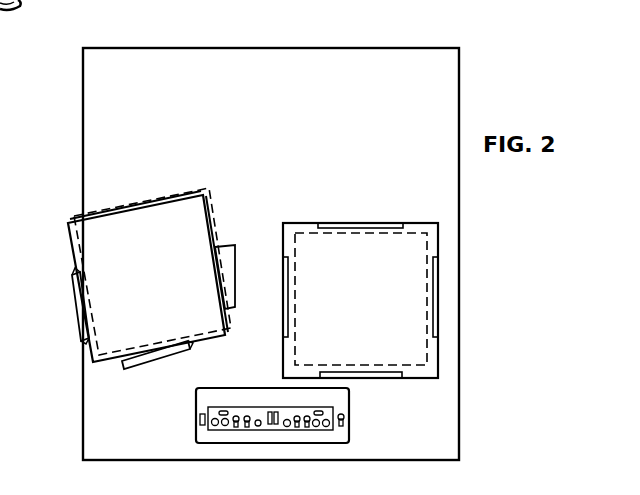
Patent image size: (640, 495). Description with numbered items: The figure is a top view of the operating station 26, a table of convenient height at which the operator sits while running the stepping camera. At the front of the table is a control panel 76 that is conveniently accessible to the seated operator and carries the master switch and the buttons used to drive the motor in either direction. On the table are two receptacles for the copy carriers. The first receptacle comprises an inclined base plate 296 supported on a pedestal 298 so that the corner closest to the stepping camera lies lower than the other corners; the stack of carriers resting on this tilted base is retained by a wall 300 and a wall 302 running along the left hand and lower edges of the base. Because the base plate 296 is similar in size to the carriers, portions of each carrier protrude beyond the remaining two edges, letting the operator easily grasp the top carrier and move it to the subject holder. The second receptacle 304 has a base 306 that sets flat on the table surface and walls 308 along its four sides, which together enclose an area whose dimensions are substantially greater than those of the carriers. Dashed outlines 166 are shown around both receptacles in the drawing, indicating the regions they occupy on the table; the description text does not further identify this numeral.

The operating station 26 is at (404, 41).
The control panel 76 is at (342, 402).
The mounting outline 166 is at (152, 200).
The inclined base plate 296 is at (165, 277).
The pedestal 298 is at (222, 246).
The wall 300 is at (167, 362).
The wall 302 is at (73, 317).
The second receptacle 304 is at (437, 241).
The base 306 is at (377, 300).
The walls 308 is at (357, 222).